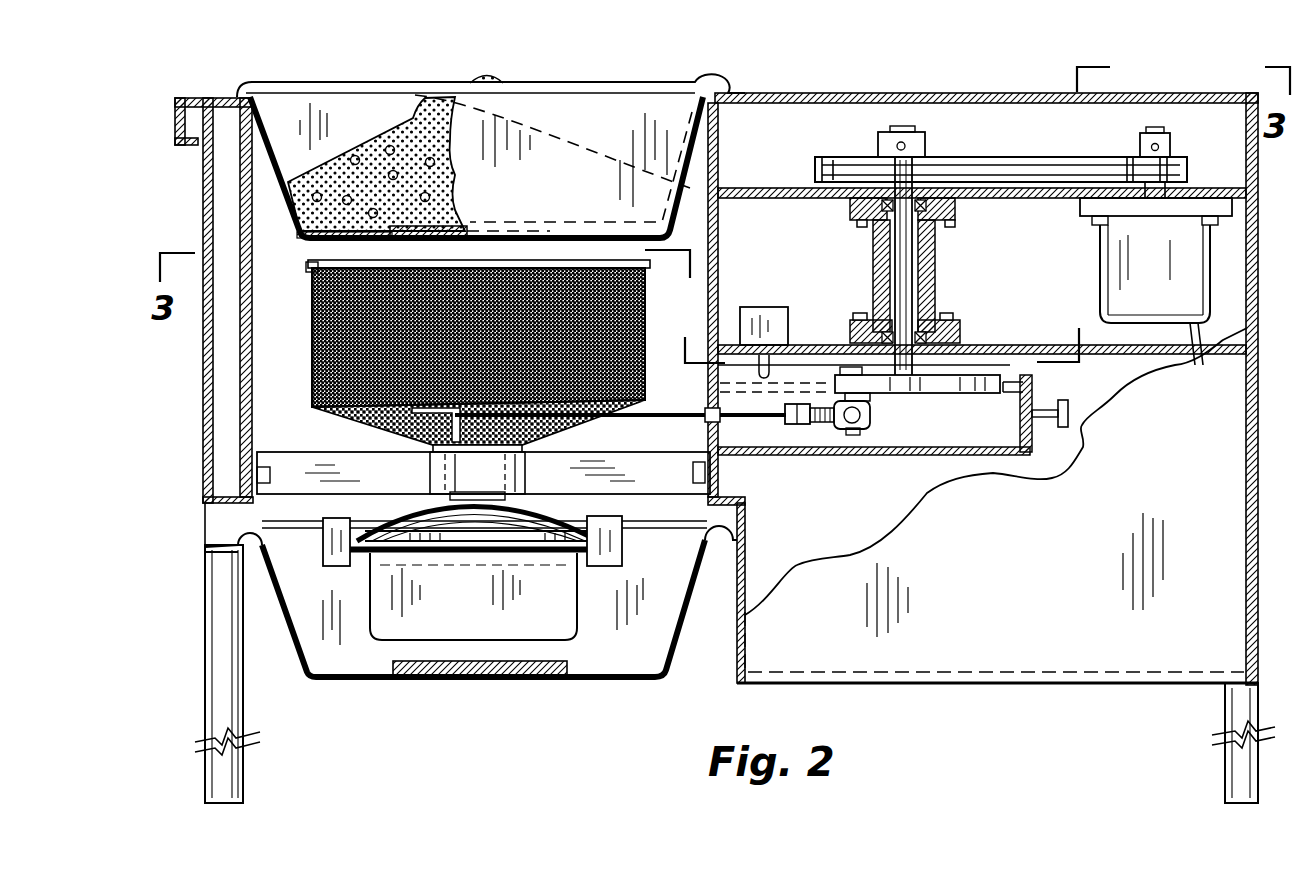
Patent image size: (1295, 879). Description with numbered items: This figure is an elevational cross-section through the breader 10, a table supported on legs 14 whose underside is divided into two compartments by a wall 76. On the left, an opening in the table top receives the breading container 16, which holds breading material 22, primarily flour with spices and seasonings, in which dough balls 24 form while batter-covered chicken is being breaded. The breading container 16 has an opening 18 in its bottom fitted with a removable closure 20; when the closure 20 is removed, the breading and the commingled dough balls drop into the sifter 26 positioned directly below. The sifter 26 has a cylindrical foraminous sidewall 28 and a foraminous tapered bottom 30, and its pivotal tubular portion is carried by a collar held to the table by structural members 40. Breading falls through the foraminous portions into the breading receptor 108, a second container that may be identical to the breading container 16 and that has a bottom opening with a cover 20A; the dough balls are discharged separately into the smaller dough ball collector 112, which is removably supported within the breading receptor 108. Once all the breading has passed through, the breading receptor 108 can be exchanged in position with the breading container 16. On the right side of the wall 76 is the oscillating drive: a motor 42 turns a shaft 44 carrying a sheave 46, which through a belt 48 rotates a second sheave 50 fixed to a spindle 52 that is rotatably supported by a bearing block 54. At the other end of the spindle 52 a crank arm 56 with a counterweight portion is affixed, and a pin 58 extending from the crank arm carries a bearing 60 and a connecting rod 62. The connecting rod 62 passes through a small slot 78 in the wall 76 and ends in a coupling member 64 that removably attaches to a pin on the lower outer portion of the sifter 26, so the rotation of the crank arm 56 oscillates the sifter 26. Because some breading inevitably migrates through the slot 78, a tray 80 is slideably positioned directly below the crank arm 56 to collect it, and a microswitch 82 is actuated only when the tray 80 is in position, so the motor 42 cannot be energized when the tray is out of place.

The breader 10 is at (1172, 90).
The legs 14 is at (227, 702).
The breading container 16 is at (700, 80).
The opening 18 is at (410, 241).
The closure 20 is at (458, 208).
The cover 20A is at (487, 670).
The breading material 22 is at (420, 128).
The dough balls 24 is at (355, 156).
The sifter 26 is at (308, 265).
The cylindrical foraminous sidewall 28 is at (340, 365).
The foraminous tapered bottom 30 is at (553, 424).
The structural members 40 is at (273, 466).
The motor 42 is at (1130, 236).
The shaft 44 is at (1150, 132).
The sheave 46 is at (1140, 152).
The belt 48 is at (1030, 165).
The second sheave 50 is at (955, 158).
The spindle 52 is at (905, 287).
The bearing block 54 is at (935, 239).
The crank arm 56 is at (915, 394).
The pin 58 is at (868, 401).
The bearing 60 is at (846, 432).
The connecting rod 62 is at (690, 412).
The coupling member 64 is at (412, 426).
The wall 76 is at (718, 238).
The slot 78 is at (708, 417).
The tray 80 is at (953, 456).
The microswitch 82 is at (780, 322).
The breading receptor 108 is at (685, 640).
The dough ball collector 112 is at (550, 622).